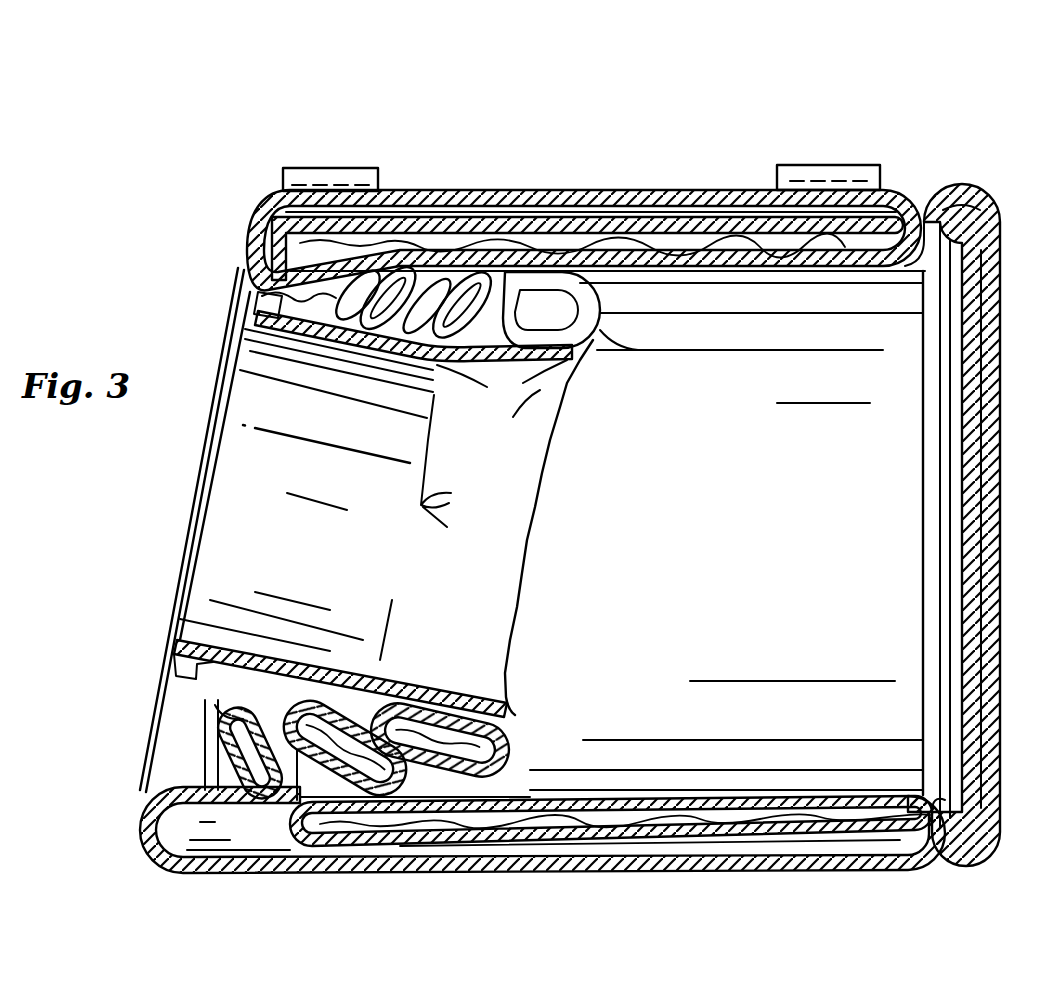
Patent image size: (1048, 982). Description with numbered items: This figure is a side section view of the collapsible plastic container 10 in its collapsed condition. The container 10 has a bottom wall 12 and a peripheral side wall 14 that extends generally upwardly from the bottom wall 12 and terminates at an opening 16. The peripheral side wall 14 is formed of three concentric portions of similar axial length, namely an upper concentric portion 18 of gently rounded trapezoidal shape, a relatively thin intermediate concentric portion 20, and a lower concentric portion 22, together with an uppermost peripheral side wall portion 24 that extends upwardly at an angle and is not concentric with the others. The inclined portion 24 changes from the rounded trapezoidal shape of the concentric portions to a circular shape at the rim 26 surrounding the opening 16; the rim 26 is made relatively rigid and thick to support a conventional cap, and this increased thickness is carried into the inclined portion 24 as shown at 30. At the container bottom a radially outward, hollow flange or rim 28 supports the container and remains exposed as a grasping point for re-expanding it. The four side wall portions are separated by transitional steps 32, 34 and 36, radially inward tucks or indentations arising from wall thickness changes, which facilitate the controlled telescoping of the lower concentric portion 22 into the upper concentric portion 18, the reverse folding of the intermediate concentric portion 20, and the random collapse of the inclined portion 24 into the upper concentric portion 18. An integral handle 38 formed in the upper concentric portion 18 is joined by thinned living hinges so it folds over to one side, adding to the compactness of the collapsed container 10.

The container 10 is at (918, 70).
The bottom wall 12 is at (1000, 545).
The peripheral side wall 14 is at (622, 192).
The opening 16 is at (230, 492).
The upper concentric portion 18 is at (540, 866).
The intermediate concentric portion 20 is at (692, 832).
The lower concentric portion 22 is at (805, 812).
The uppermost peripheral side wall portion 24 is at (522, 758).
The rim 26 is at (262, 305).
The flange or rim 28 is at (975, 188).
The increased thickness 30 is at (367, 352).
The transitional step 32 is at (222, 768).
The transitional step 34 is at (905, 870).
The transitional step 36 is at (282, 828).
The handle 38 is at (356, 162).